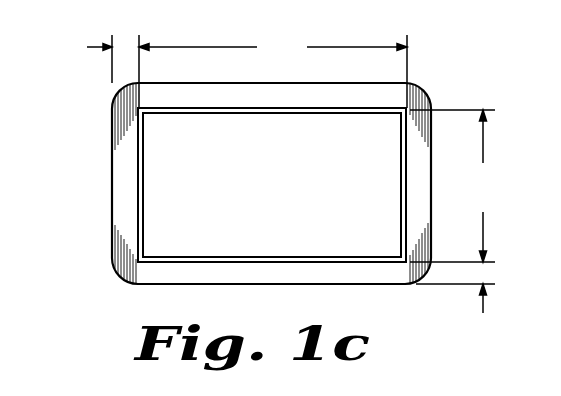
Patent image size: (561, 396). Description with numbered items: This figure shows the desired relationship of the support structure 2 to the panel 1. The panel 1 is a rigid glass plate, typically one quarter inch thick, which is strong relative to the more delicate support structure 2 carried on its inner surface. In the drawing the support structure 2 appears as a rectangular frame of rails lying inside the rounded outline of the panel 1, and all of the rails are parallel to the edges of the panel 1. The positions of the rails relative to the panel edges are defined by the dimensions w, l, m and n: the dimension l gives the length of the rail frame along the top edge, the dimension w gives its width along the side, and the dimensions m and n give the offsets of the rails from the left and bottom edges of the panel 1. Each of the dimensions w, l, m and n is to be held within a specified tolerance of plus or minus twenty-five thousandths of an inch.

The panel 1 is at (112, 133).
The support structure 2 is at (138, 176).
The dimension m is at (113, 71).
The dimension l is at (283, 52).
The dimension w is at (455, 186).
The dimension n is at (458, 290).